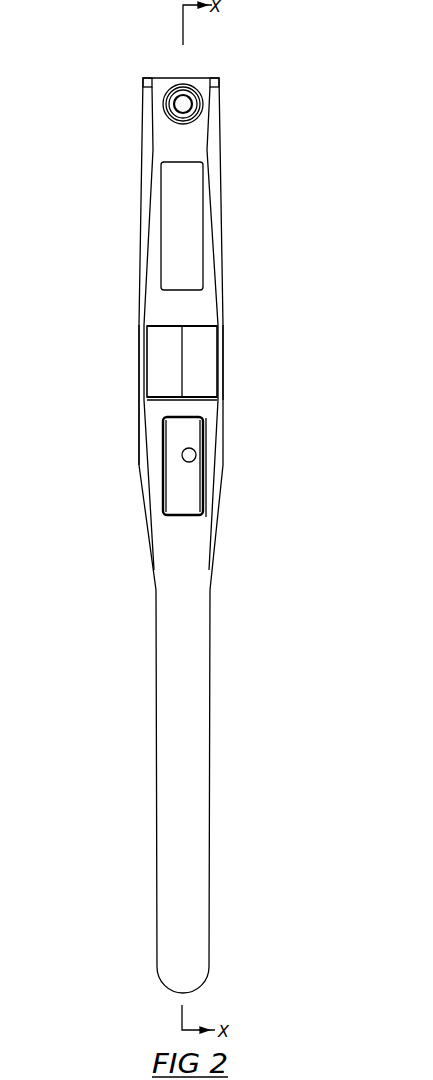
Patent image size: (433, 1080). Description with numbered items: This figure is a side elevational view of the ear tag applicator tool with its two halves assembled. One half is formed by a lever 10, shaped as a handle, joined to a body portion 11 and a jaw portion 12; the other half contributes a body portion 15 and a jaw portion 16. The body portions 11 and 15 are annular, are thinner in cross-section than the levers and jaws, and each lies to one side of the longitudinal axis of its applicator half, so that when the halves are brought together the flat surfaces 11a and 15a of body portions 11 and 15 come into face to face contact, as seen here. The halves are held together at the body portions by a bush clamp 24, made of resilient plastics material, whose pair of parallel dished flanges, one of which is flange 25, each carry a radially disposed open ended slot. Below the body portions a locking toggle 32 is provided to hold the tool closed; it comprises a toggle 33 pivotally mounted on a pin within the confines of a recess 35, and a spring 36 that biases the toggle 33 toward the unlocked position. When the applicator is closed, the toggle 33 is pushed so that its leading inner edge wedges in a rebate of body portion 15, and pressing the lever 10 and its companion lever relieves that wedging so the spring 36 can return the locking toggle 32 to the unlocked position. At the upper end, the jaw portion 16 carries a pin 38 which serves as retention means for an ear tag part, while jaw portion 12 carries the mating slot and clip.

The lever 10 is at (195, 838).
The jaw portion 12 is at (150, 100).
The pin 38 is at (190, 96).
The jaw portion 16 is at (208, 237).
The body portion 15 is at (167, 347).
The flat surface 15a is at (254, 274).
The flat surface 11a is at (185, 338).
The body portion 11 is at (198, 365).
The flange 25 is at (138, 365).
The bush clamp 24 is at (139, 410).
The locking toggle 32 is at (203, 513).
The toggle 33 is at (177, 503).
The recess 35 is at (200, 420).
The spring 36 is at (197, 458).